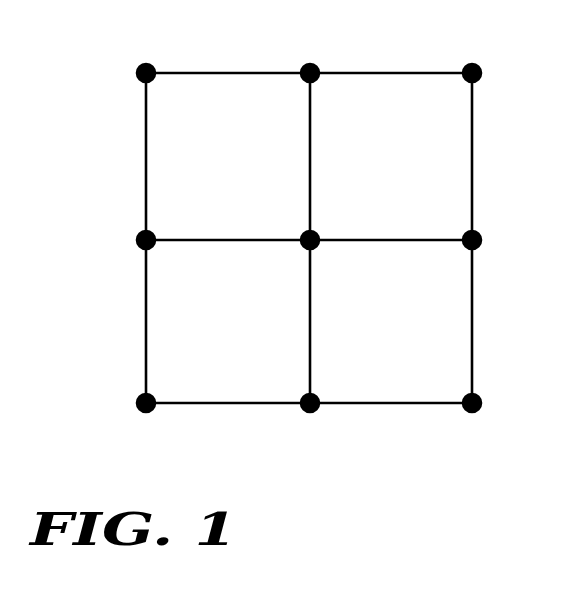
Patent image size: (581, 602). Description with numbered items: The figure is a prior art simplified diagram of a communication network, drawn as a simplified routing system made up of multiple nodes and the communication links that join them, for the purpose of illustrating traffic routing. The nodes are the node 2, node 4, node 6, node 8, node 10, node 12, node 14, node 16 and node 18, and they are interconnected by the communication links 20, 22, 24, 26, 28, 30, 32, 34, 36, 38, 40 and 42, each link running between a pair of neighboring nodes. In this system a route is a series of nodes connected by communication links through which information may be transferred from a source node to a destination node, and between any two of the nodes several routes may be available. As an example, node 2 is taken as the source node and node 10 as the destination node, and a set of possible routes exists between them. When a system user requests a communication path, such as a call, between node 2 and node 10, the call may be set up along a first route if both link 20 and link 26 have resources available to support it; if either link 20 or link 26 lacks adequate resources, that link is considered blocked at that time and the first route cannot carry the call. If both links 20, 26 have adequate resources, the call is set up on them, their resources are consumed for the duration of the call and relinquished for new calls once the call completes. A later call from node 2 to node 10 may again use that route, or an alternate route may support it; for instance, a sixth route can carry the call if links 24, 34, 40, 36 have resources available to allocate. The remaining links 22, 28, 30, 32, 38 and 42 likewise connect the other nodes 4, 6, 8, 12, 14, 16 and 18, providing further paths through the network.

The node 2 is at (148, 64).
The node 4 is at (311, 64).
The node 6 is at (473, 64).
The node 8 is at (142, 236).
The node 10 is at (305, 236).
The node 12 is at (468, 236).
The node 14 is at (147, 409).
The node 16 is at (311, 409).
The node 18 is at (473, 409).
The communication link 20 is at (227, 70).
The communication link 22 is at (390, 70).
The communication link 24 is at (147, 157).
The communication link 26 is at (311, 157).
The communication link 28 is at (473, 157).
The communication link 30 is at (228, 242).
The communication link 32 is at (390, 242).
The communication link 34 is at (147, 352).
The communication link 36 is at (311, 352).
The communication link 38 is at (473, 352).
The communication link 40 is at (228, 405).
The communication link 42 is at (390, 405).